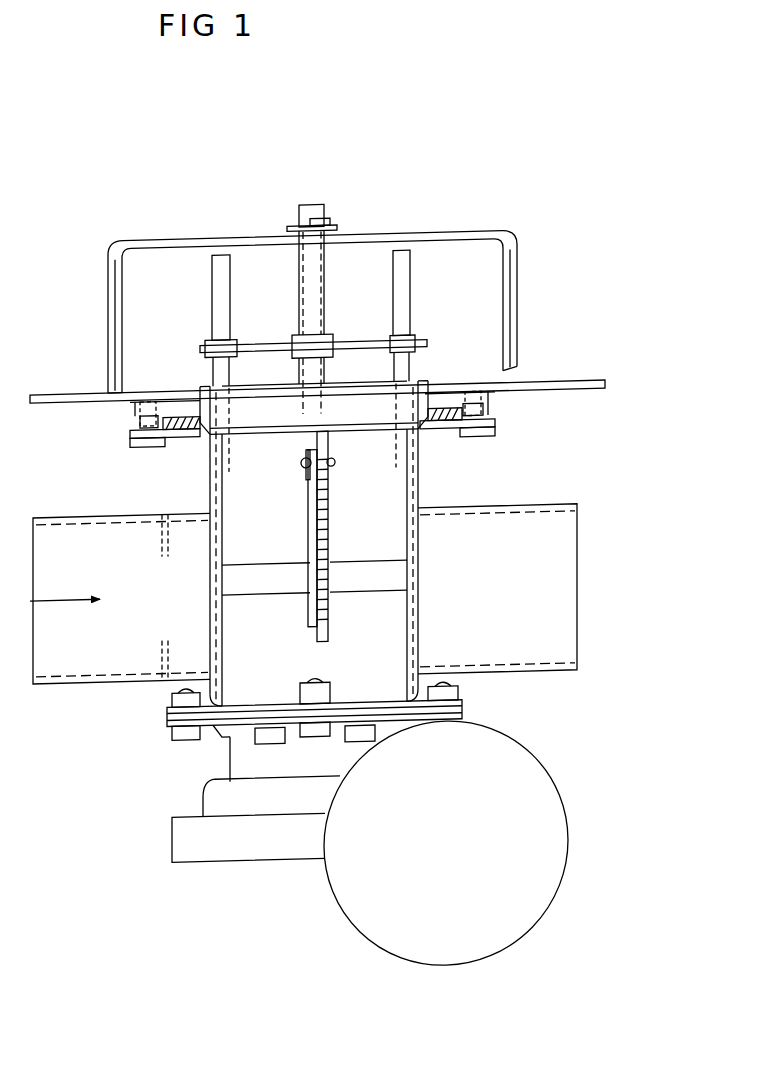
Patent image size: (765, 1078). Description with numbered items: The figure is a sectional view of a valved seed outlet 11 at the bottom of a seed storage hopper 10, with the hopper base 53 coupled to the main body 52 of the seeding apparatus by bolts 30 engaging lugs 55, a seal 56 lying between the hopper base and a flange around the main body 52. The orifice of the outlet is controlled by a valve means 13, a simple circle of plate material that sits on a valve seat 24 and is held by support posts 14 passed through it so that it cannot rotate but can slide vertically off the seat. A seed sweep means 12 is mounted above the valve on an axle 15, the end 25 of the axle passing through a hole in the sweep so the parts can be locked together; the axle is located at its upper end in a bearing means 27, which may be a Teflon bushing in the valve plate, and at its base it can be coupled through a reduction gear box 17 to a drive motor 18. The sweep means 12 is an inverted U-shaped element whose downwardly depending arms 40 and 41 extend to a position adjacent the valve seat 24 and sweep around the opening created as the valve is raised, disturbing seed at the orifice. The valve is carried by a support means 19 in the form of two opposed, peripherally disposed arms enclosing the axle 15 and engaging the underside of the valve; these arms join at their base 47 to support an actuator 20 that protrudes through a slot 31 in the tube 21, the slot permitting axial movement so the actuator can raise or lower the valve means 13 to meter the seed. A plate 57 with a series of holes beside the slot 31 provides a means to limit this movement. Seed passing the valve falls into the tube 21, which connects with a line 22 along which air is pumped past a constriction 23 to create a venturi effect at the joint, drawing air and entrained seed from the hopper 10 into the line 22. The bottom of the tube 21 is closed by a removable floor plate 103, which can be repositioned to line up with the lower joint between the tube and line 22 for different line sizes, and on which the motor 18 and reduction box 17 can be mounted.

The seed storage hopper 10 is at (78, 396).
The valved seed outlet 11 is at (423, 436).
The seed sweep means 12 is at (437, 237).
The valve means 13 is at (372, 352).
The support posts 14 is at (220, 320).
The axle 15 is at (326, 318).
The reduction gear box 17 is at (248, 837).
The drive motor 18 is at (446, 843).
The support means 19 is at (223, 528).
The actuator 20 is at (307, 592).
The tube 21 is at (314, 430).
The line 22 is at (120, 598).
The constriction 23 is at (163, 562).
The valve seat 24 is at (203, 390).
The end of axle 25 is at (323, 216).
The bearing means 27 is at (292, 352).
The bolts 30 is at (140, 445).
The slot 31 is at (308, 494).
The downwardly depending arm 40 is at (515, 334).
The downwardly depending arm 41 is at (123, 328).
The base 47 is at (314, 576).
The main body 52 is at (142, 693).
The base of hopper 53 is at (152, 398).
The lugs 55 is at (196, 434).
The seal 56 is at (470, 378).
The plate 57 is at (329, 503).
The removable floor plate 103 is at (289, 747).